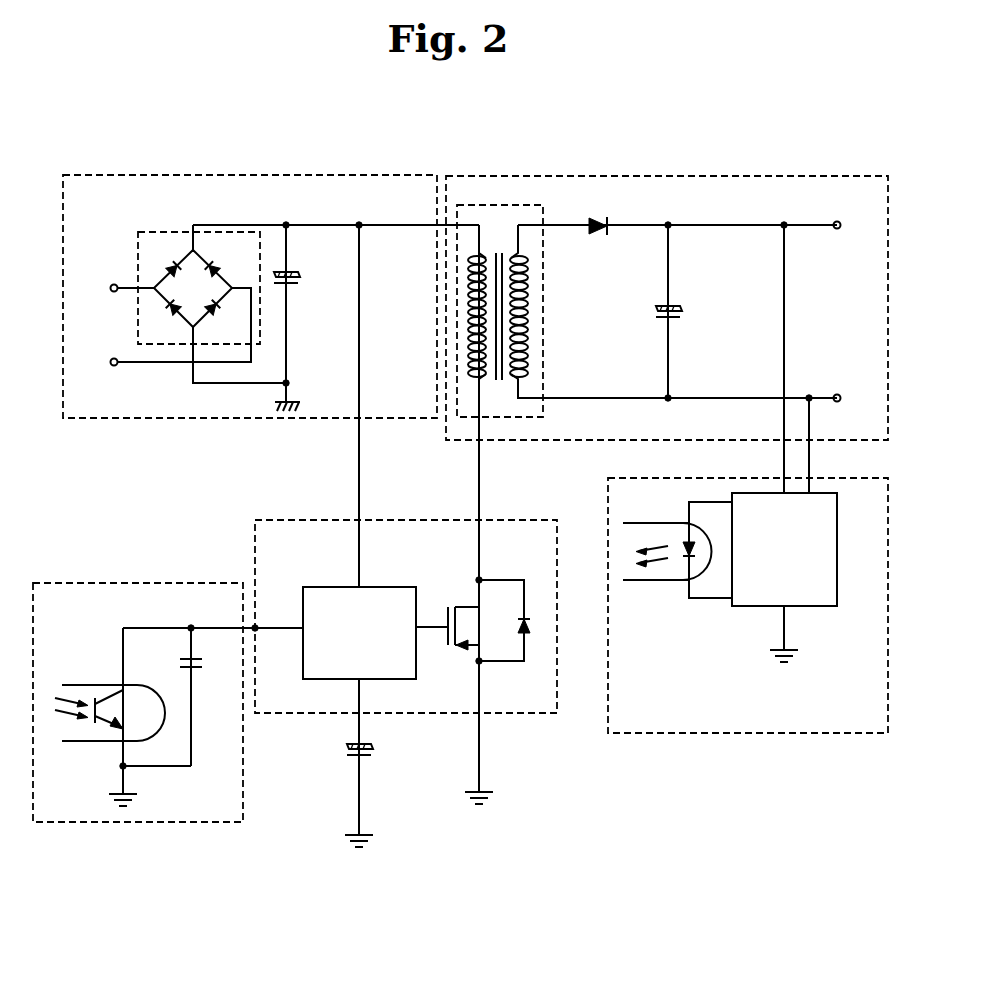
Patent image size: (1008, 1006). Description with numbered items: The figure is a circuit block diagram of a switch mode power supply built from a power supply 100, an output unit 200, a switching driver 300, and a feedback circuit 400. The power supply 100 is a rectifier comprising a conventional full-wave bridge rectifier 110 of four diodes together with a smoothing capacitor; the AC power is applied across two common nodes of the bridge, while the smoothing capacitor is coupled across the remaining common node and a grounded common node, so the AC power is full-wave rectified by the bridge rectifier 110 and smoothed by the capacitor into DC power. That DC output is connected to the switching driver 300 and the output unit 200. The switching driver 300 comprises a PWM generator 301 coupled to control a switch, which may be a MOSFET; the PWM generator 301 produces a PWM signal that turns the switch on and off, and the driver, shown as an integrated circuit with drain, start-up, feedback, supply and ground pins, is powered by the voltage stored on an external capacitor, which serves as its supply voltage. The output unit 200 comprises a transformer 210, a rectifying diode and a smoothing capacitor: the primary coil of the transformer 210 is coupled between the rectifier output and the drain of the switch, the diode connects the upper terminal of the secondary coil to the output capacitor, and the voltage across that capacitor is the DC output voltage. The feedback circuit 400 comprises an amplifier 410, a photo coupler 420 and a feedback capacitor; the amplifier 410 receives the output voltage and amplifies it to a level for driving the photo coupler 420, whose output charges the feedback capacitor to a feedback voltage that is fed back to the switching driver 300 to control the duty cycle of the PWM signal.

The power supply 100 is at (197, 175).
The full-wave bridge rectifier 110 is at (163, 232).
The output unit 200 is at (597, 176).
The transformer 210 is at (543, 417).
The switching driver 300 is at (262, 520).
The PWM generator 301 is at (325, 587).
The feedback circuit 400 is at (90, 583).
The amplifier 410 is at (820, 606).
The photo coupler 420 is at (102, 743).